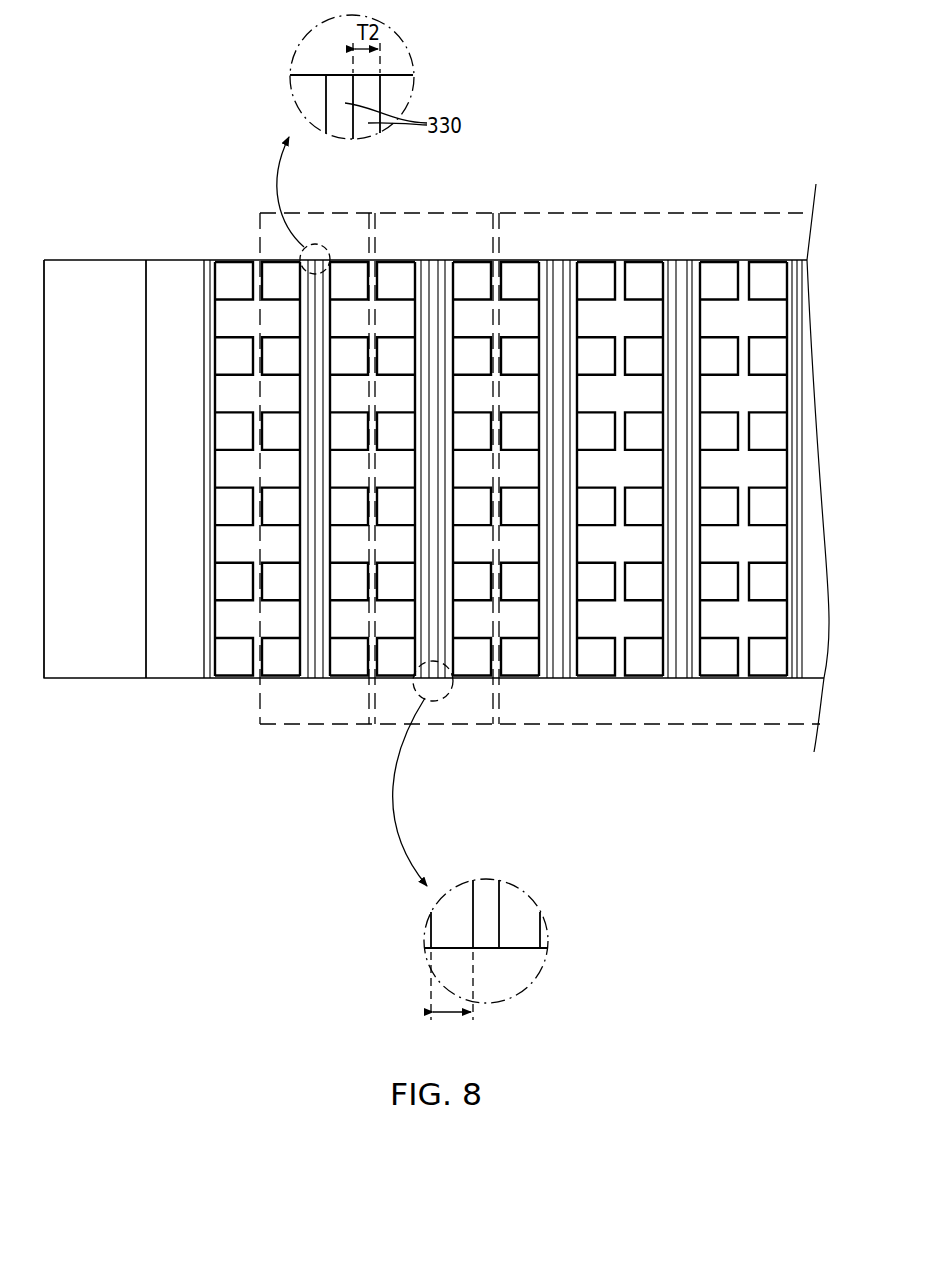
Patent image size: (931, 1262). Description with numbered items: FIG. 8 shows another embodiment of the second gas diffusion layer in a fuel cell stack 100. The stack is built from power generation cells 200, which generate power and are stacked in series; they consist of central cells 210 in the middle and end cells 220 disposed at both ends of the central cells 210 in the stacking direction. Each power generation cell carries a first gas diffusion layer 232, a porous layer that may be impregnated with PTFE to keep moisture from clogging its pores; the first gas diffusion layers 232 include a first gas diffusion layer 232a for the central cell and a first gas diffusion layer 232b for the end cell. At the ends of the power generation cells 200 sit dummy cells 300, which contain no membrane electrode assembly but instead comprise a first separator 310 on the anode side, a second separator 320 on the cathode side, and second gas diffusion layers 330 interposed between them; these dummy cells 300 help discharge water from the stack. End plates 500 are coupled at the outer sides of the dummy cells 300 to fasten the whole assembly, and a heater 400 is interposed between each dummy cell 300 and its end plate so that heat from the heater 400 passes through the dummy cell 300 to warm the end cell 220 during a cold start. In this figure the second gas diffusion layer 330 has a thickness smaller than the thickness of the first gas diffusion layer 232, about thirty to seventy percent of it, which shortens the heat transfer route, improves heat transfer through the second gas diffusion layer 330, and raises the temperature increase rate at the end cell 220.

The fuel cell stack 100 is at (145, 164).
The power generation cells 200 is at (540, 586).
The central cells 210 is at (650, 479).
The end cells 220 is at (497, 606).
The first gas diffusion layer 232 is at (550, 793).
The first gas diffusion layer for the central cell 232a is at (570, 680).
The first gas diffusion layer for the end cell 232b is at (447, 683).
The dummy cells 300 is at (314, 474).
The first separator 310 is at (347, 680).
The second separator 320 is at (285, 680).
The second gas diffusion layer 330 is at (320, 680).
The heater 400 is at (170, 262).
The end plates 500 is at (98, 262).